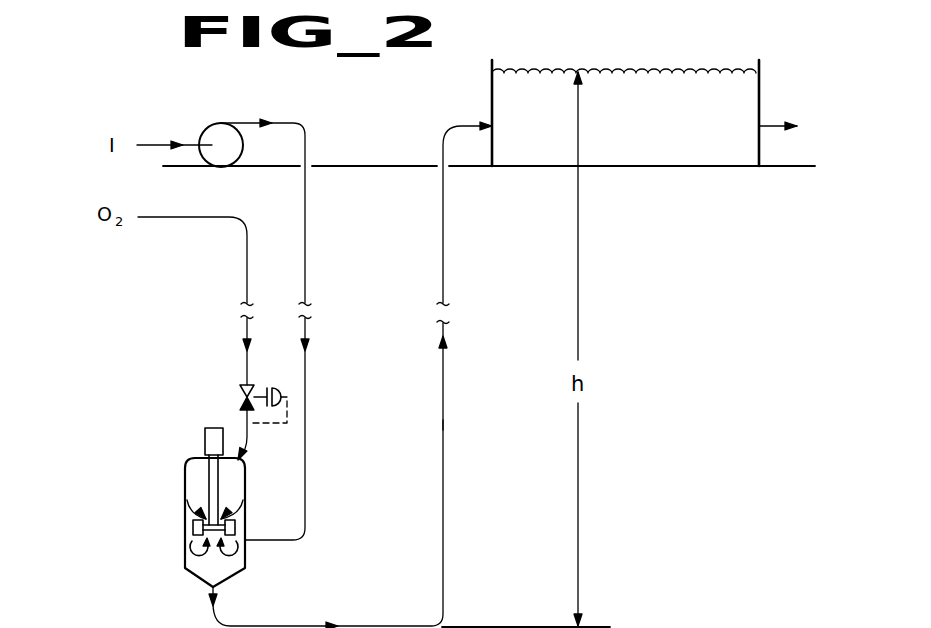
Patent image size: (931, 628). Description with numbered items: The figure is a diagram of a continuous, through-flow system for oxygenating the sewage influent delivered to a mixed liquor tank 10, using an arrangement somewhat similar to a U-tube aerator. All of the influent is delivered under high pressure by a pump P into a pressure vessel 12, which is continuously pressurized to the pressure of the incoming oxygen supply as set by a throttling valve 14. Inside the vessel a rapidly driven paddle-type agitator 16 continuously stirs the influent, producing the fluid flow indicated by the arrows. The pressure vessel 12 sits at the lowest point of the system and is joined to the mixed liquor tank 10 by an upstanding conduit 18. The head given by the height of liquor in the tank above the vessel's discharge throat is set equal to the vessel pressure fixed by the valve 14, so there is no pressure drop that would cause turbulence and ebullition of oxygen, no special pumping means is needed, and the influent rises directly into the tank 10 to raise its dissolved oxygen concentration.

The mixed liquor tank 10 is at (759, 83).
The pressure vessel 12 is at (185, 491).
The throttling valve 14 is at (240, 394).
The paddle-type agitator 16 is at (209, 467).
The upstanding conduit 18 is at (445, 424).
The pump P is at (212, 130).